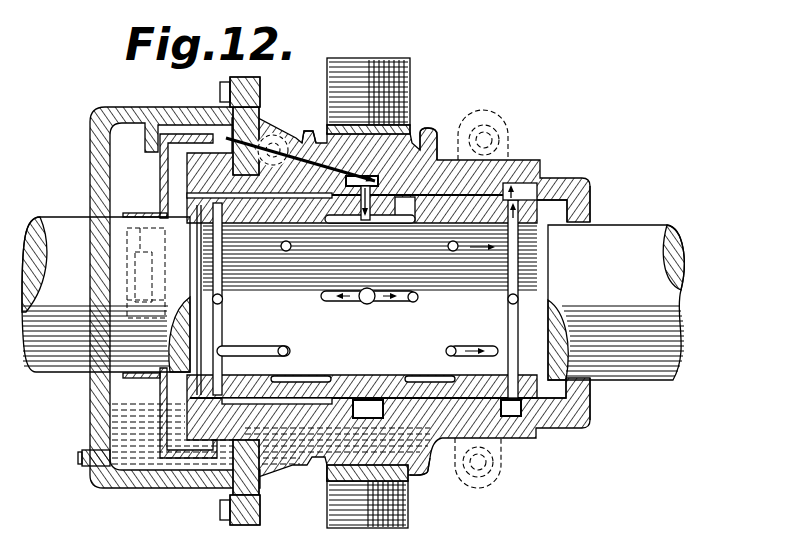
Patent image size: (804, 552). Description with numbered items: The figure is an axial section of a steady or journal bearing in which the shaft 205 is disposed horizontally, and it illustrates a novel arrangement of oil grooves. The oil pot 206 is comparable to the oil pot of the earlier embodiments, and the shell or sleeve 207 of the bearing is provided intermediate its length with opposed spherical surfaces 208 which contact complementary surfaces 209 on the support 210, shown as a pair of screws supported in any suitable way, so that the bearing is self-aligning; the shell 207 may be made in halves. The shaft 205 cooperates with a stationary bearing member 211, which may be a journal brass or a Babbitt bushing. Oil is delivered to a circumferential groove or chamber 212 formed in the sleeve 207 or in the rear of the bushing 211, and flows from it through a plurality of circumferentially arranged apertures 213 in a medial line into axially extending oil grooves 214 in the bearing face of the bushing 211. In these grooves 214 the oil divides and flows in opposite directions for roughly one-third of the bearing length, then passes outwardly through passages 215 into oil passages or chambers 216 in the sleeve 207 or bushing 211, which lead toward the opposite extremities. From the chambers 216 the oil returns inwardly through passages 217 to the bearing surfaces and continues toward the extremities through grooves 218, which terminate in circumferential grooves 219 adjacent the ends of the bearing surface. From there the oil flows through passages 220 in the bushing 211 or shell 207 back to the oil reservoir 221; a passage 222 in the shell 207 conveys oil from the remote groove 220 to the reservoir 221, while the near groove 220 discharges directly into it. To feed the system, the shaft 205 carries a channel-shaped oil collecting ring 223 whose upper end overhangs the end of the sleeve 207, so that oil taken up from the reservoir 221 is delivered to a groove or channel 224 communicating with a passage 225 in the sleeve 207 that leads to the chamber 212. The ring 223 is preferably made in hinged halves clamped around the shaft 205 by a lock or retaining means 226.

The shaft 205 is at (63, 237).
The oil pot 206 is at (207, 98).
The shell or sleeve 207 is at (418, 148).
The spherical surfaces 208 is at (428, 128).
The complementary surfaces 209 is at (348, 125).
The support 210 is at (388, 60).
The stationary bearing member 211 is at (517, 183).
The circumferential groove or chamber 212 is at (395, 170).
The apertures 213 is at (375, 228).
The axially extending oil grooves 214 is at (346, 224).
The passages 215 is at (315, 224).
The oil passages or chambers 216 is at (431, 224).
The passages 217 is at (284, 251).
The grooves 218 is at (243, 344).
The circumferential grooves 219 is at (560, 198).
The passages 220 is at (186, 206).
The oil reservoir 221 is at (127, 458).
The passage 222 is at (560, 432).
The channel-shaped oil collecting ring 223 is at (160, 391).
The groove or channel 224 is at (230, 136).
The passage 225 is at (276, 136).
The lock or retaining means 226 is at (126, 290).